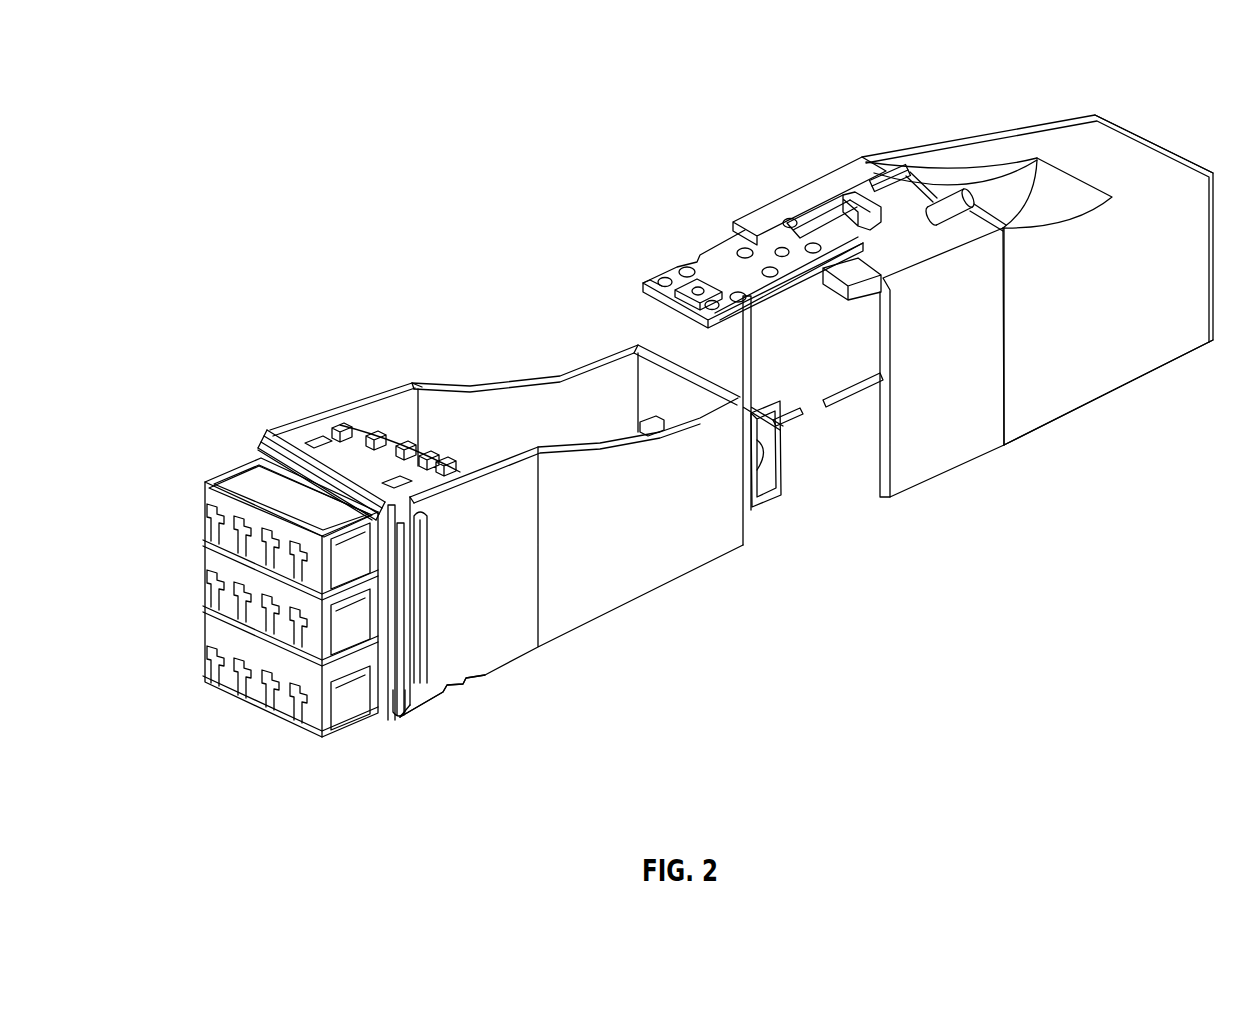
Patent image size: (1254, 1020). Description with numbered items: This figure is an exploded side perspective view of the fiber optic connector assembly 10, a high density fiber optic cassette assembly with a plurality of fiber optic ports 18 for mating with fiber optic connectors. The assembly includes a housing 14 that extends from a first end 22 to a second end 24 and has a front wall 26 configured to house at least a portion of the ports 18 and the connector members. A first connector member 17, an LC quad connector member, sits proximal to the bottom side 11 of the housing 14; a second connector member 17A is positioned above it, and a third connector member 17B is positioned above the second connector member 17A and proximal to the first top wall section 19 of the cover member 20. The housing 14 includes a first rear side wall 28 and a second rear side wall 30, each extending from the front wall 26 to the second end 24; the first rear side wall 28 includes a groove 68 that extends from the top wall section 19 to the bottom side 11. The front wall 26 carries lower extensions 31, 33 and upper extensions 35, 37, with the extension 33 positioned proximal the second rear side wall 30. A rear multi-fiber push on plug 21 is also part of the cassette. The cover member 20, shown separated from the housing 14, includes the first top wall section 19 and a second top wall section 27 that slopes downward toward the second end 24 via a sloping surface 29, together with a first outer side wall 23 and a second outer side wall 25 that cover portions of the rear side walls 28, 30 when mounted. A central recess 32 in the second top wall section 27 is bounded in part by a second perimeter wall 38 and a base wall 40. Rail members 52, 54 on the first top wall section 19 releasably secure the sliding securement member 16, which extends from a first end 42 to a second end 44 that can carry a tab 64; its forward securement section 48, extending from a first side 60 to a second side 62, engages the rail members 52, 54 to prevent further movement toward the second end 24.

The fiber optic connector assembly 10 is at (641, 141).
The bottom side 11 is at (432, 723).
The housing 14 is at (308, 430).
The sliding securement member 16 is at (731, 259).
The first connector member 17 is at (352, 718).
The second connector member 17A is at (447, 690).
The third connector member 17B is at (230, 476).
The fiber optic ports 18 is at (213, 520).
The first top wall section 19 is at (800, 187).
The cover member 20 is at (1043, 141).
The rear multi-fiber push on plug 21 is at (770, 470).
The first end 22 is at (237, 787).
The first outer side wall 23 is at (1140, 355).
The second end 24 is at (853, 496).
The second outer side wall 25 is at (740, 362).
The front wall 26 is at (347, 473).
The second top wall section 27 is at (973, 167).
The first rear side wall 28 is at (695, 548).
The sloping surface 29 is at (1154, 151).
The second rear side wall 30 is at (555, 370).
The lower extension 31 is at (398, 722).
The recess 32 is at (1014, 195).
The lower extension 33 is at (194, 645).
The upper extension 35 is at (427, 520).
The upper extension 37 is at (267, 430).
The second perimeter wall 38 is at (940, 181).
The base wall 40 is at (1057, 193).
The first end 42 is at (649, 269).
The second end 44 is at (836, 216).
The forward securement section 48 is at (657, 265).
The rail member 52 is at (985, 215).
The rail member 54 is at (871, 180).
The first side 60 is at (757, 306).
The second side 62 is at (690, 261).
The tab 64 is at (884, 277).
The groove 68 is at (408, 605).